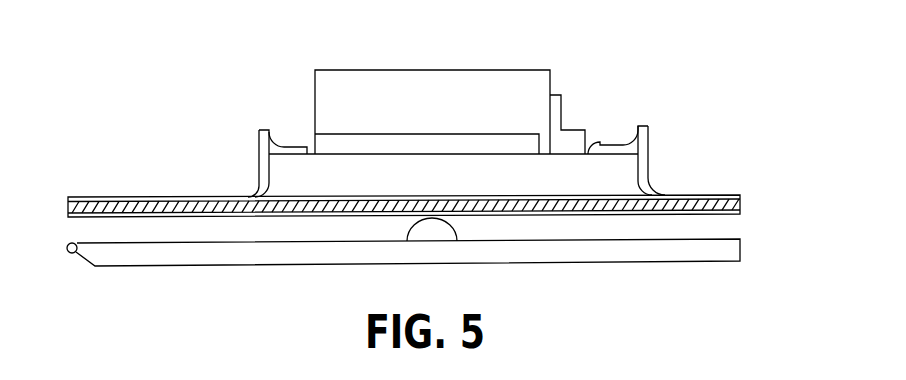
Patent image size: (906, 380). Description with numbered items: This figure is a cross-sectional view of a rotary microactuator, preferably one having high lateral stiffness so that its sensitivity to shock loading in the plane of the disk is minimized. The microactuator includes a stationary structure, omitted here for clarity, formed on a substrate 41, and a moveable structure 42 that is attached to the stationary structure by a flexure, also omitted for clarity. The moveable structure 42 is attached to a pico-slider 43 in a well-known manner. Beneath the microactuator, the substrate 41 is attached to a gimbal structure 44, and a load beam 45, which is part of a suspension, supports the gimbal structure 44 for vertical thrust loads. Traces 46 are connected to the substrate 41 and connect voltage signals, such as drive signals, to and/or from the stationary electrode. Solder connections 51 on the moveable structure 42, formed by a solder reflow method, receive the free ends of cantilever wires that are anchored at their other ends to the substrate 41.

The microactuator substrate 41 is at (625, 172).
The moveable structure 42 is at (311, 142).
The pico-slider 43 is at (346, 70).
The gimbal structure 44 is at (742, 202).
The load beam 45 is at (742, 249).
The traces 46 is at (648, 143).
The solder connections 51 is at (563, 129).